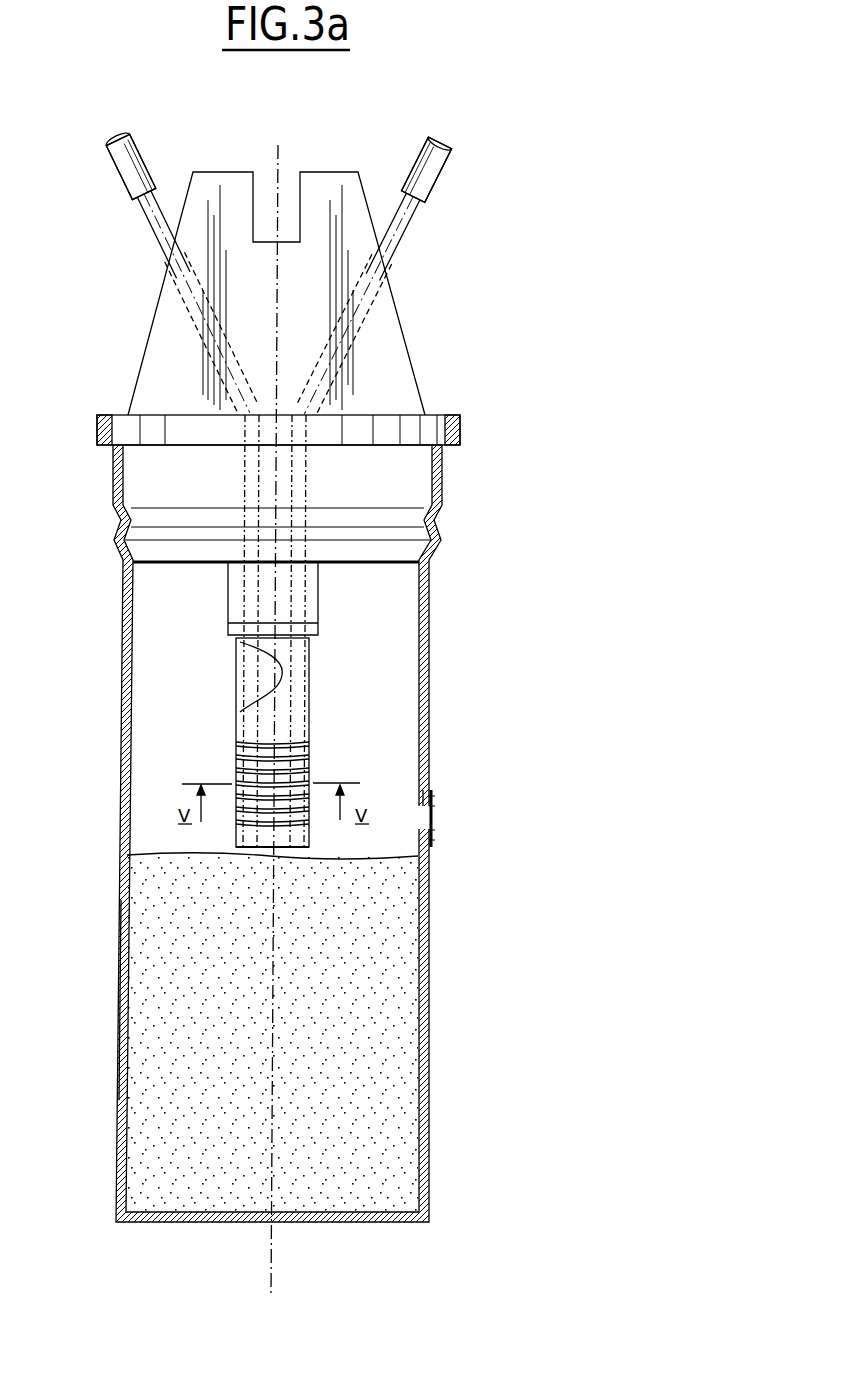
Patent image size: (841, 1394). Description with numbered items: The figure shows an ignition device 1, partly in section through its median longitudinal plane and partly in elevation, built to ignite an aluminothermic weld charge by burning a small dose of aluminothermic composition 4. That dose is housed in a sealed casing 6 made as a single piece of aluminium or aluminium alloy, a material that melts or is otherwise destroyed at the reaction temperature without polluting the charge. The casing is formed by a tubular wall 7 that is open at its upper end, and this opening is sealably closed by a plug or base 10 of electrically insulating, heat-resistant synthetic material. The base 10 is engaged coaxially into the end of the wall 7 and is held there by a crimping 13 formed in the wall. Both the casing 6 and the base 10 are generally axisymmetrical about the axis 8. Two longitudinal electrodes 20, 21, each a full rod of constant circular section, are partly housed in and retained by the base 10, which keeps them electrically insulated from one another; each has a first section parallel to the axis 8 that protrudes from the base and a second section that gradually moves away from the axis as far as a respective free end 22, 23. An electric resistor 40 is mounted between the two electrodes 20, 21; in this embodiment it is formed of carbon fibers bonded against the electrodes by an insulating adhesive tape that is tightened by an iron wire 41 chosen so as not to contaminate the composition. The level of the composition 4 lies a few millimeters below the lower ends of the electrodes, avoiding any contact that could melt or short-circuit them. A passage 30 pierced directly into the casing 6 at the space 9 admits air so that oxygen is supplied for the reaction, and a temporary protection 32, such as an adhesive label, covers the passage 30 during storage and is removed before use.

The ignition device 1 is at (84, 825).
The dose of aluminothermic composition 4 is at (385, 1000).
The sealed casing 6 is at (118, 1068).
The tubular wall 7 is at (120, 1028).
The axis 8 is at (279, 151).
The space 9 is at (145, 585).
The plug (base) 10 is at (402, 363).
The crimping 13 is at (108, 522).
The electrode 20 is at (398, 231).
The electrode 21 is at (153, 228).
The free end 22 is at (445, 172).
The free end 23 is at (128, 187).
The passage 30 is at (435, 818).
The temporary protection 32 is at (435, 801).
The electric resistor 40 is at (300, 718).
The iron wire 41 is at (303, 830).